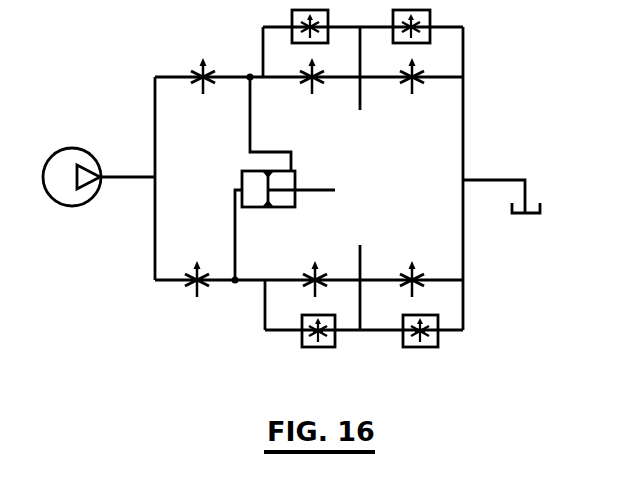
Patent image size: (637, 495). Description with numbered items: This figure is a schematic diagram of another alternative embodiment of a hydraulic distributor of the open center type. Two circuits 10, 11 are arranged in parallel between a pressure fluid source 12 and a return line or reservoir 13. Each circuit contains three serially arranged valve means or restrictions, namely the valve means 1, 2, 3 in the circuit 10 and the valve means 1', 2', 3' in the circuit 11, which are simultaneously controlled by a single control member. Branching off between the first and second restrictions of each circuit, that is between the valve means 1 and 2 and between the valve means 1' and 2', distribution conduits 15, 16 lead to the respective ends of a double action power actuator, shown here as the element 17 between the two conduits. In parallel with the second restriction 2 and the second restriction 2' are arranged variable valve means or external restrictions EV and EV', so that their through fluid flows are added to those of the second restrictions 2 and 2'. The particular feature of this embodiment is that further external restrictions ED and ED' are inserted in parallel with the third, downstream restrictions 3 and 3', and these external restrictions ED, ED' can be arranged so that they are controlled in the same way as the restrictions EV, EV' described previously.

The valve means 1 is at (200, 68).
The second restriction 2 is at (309, 73).
The third restriction 3 is at (408, 73).
The valve means 1' is at (190, 285).
The second restriction 2' is at (319, 284).
The third restriction 3' is at (418, 284).
The circuit 10 is at (296, 127).
The circuit 11 is at (296, 228).
The pressure fluid source 12 is at (99, 177).
The return line or reservoir 13 is at (512, 194).
The distribution conduit 15 is at (269, 123).
The distribution conduit 16 is at (247, 237).
The directional control valve 17 is at (276, 186).
The variable valve means EV is at (323, 23).
The external restriction ED is at (426, 23).
The variable valve means EV' is at (318, 345).
The external restriction ED' is at (420, 345).